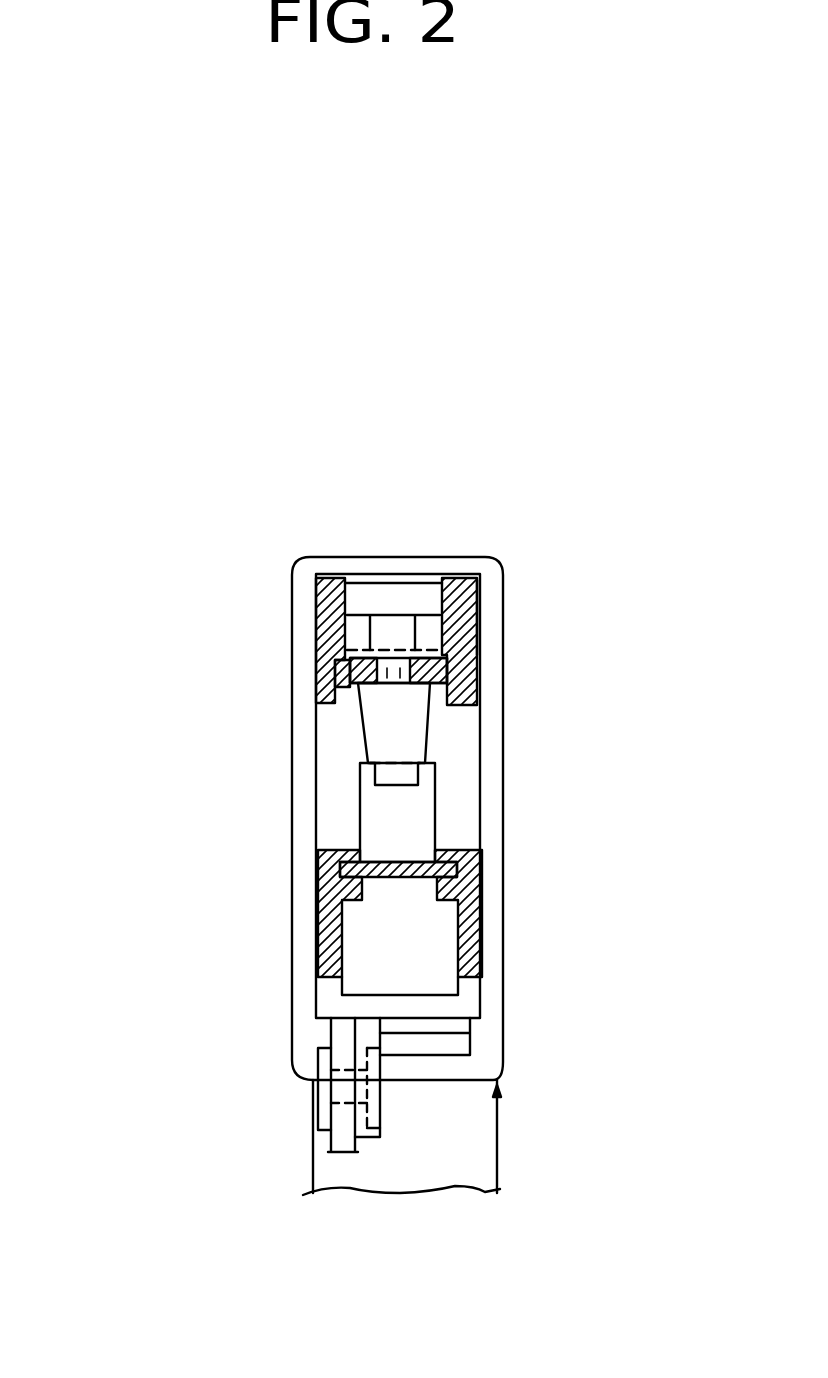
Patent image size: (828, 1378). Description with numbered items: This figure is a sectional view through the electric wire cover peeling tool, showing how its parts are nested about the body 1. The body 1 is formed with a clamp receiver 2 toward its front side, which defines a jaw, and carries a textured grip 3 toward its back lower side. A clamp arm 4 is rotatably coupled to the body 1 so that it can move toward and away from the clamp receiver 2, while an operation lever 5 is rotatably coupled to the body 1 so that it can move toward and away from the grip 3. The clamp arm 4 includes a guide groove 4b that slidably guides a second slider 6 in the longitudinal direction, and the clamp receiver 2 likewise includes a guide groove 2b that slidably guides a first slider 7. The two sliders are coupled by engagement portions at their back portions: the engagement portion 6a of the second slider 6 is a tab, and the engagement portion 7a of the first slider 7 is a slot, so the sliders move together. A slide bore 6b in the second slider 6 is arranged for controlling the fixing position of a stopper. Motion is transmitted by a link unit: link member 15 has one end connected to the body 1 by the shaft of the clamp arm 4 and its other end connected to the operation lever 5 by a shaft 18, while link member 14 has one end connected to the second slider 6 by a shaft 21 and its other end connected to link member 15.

The body 1 is at (507, 940).
The clamp receiver 2 is at (392, 967).
The guide groove 2b is at (480, 900).
The grip 3 is at (470, 1167).
The clamp arm 4 is at (287, 607).
The guide groove 4b is at (345, 703).
The operation lever 5 is at (345, 1133).
The second slider 6 is at (365, 675).
The engagement portion 6a is at (407, 724).
The slide bore 6b is at (390, 668).
The first slider 7 is at (416, 854).
The engagement portion 7a is at (413, 807).
The link member 14 is at (388, 627).
The link member 15 is at (383, 1037).
The shaft 18 is at (382, 1088).
The shaft 21 is at (482, 607).